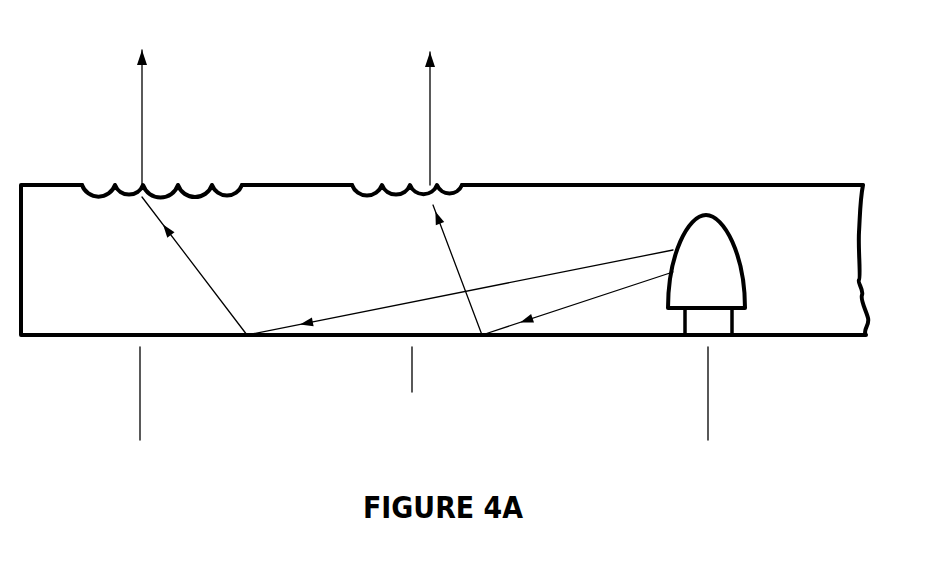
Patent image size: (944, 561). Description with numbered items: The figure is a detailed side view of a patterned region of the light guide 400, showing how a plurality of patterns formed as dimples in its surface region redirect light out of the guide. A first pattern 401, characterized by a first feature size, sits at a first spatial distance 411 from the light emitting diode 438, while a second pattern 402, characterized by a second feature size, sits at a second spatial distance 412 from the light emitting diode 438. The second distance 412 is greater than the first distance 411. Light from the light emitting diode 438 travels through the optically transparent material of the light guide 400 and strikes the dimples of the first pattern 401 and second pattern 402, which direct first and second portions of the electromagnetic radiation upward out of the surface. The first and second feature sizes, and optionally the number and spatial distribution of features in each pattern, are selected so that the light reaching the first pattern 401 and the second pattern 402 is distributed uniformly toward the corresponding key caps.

The light guide 400 is at (688, 90).
The first pattern 401 is at (421, 182).
The second pattern 402 is at (167, 182).
The first spatial distance 411 is at (708, 373).
The second spatial distance 412 is at (708, 425).
The light source (LED) 438 is at (728, 290).